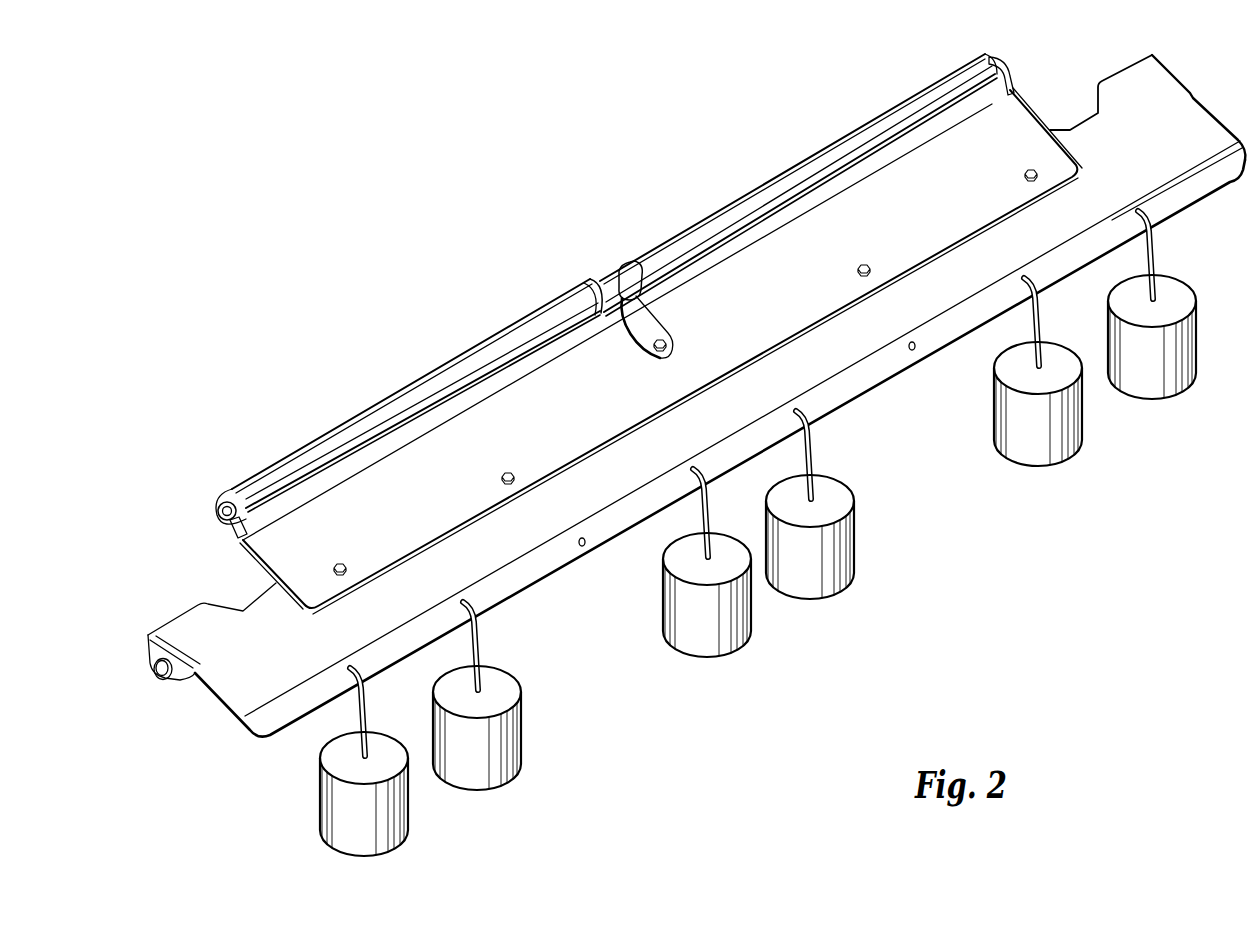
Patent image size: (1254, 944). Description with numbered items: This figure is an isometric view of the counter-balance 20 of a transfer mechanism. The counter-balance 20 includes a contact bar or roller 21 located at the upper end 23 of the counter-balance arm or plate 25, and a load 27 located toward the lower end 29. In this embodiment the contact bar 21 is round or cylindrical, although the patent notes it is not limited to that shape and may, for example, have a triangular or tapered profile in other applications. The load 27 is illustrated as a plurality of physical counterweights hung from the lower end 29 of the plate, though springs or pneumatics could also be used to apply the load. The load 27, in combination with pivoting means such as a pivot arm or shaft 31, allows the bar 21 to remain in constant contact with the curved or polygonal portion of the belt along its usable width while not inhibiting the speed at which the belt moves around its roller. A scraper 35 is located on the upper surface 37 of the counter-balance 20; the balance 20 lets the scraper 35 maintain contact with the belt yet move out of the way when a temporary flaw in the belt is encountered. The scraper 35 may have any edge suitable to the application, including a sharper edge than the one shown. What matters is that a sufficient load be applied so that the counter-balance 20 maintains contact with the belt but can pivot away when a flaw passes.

The counter-balance 20 is at (491, 315).
The contact bar 21 is at (377, 413).
The upper end 23 is at (993, 100).
The counter-balance arm or plate 25 is at (775, 292).
The load 27 is at (857, 600).
The lower end 29 is at (517, 594).
The pivot arm or shaft 31 is at (160, 682).
The scraper 35 is at (616, 438).
The upper surface 37 is at (538, 410).